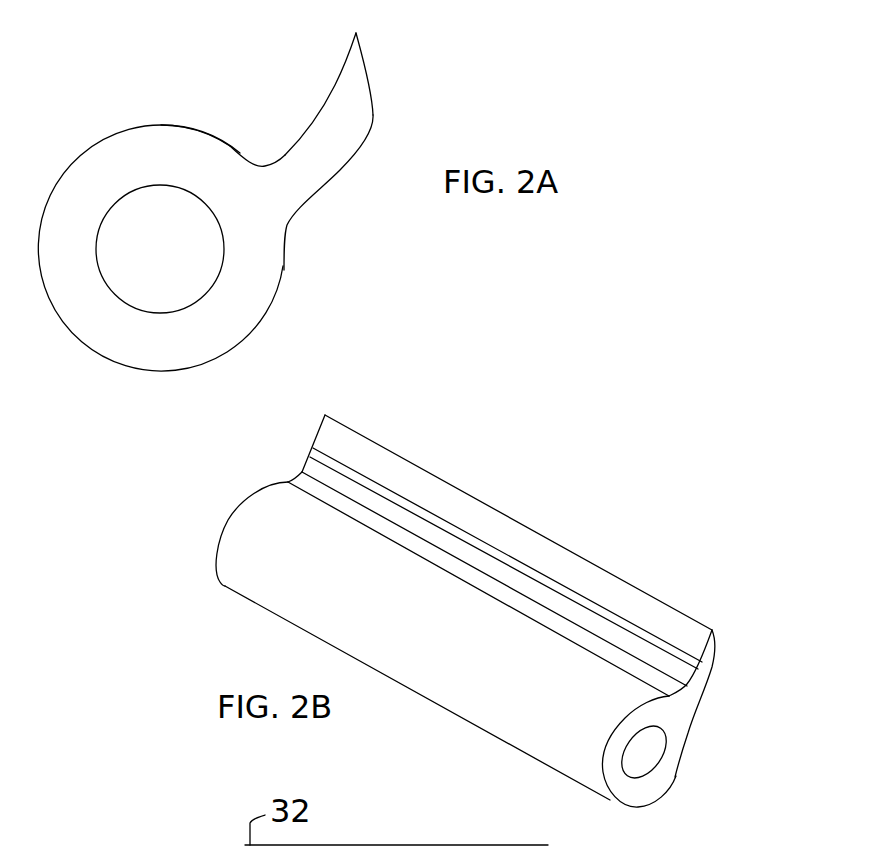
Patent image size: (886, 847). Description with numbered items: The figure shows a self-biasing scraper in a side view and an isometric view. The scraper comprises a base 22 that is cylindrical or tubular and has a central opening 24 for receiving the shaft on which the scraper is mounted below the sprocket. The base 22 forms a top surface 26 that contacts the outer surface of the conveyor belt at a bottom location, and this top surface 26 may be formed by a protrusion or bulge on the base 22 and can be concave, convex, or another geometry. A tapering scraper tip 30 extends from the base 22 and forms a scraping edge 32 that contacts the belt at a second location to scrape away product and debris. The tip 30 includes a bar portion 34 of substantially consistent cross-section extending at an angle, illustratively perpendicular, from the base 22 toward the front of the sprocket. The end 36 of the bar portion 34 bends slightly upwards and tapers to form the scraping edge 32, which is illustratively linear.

In FIG. 2A, the base 22 is at (108, 315).
In FIG. 2B, the base 22 is at (242, 528).
In FIG. 2A, the central opening 24 is at (173, 254).
In FIG. 2B, the central opening 24 is at (642, 753).
In FIG. 2A, the top surface 26 is at (174, 128).
In FIG. 2A, the tapering scraper tip 30 is at (258, 138).
In FIG. 2B, the tapering scraper tip 30 is at (307, 438).
In FIG. 2A, the scraping edge 32 is at (357, 34).
In FIG. 2B, the scraping edge 32 is at (662, 601).
In FIG. 2A, the bar portion 34 is at (308, 166).
In FIG. 2B, the bar portion 34 is at (700, 685).
In FIG. 2A, the end of the bar portion 36 is at (357, 102).
In FIG. 2B, the end of the bar portion 36 is at (712, 648).